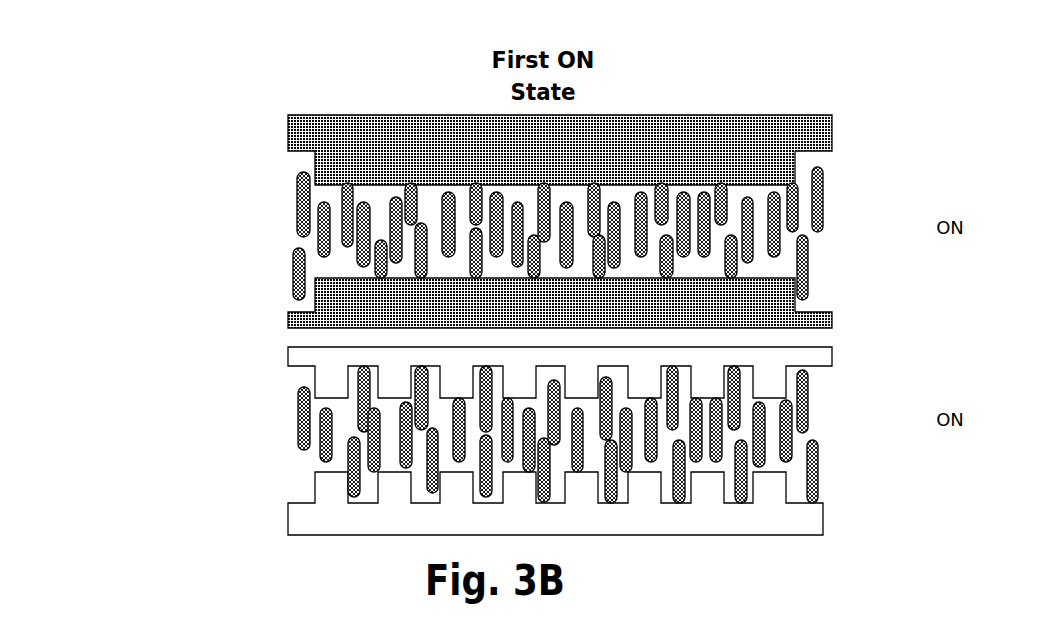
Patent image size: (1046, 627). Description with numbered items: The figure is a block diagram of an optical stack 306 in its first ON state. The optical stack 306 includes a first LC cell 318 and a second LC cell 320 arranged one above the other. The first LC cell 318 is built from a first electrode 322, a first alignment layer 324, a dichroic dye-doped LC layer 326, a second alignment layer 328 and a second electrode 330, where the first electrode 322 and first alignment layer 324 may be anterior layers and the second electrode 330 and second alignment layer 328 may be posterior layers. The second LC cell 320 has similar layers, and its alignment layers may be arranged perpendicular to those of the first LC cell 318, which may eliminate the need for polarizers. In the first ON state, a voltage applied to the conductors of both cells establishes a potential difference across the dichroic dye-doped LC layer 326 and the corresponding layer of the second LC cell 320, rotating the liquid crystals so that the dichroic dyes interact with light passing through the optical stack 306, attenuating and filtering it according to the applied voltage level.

The optical stack 306 is at (283, 58).
The first LC cell 318 is at (189, 322).
The second LC cell 320 is at (189, 535).
The first electrode 322 is at (287, 133).
The first alignment layer 324 is at (795, 160).
The dichroic dye-doped LC layer 326 is at (840, 237).
The second alignment layer 328 is at (796, 305).
The second electrode 330 is at (288, 318).